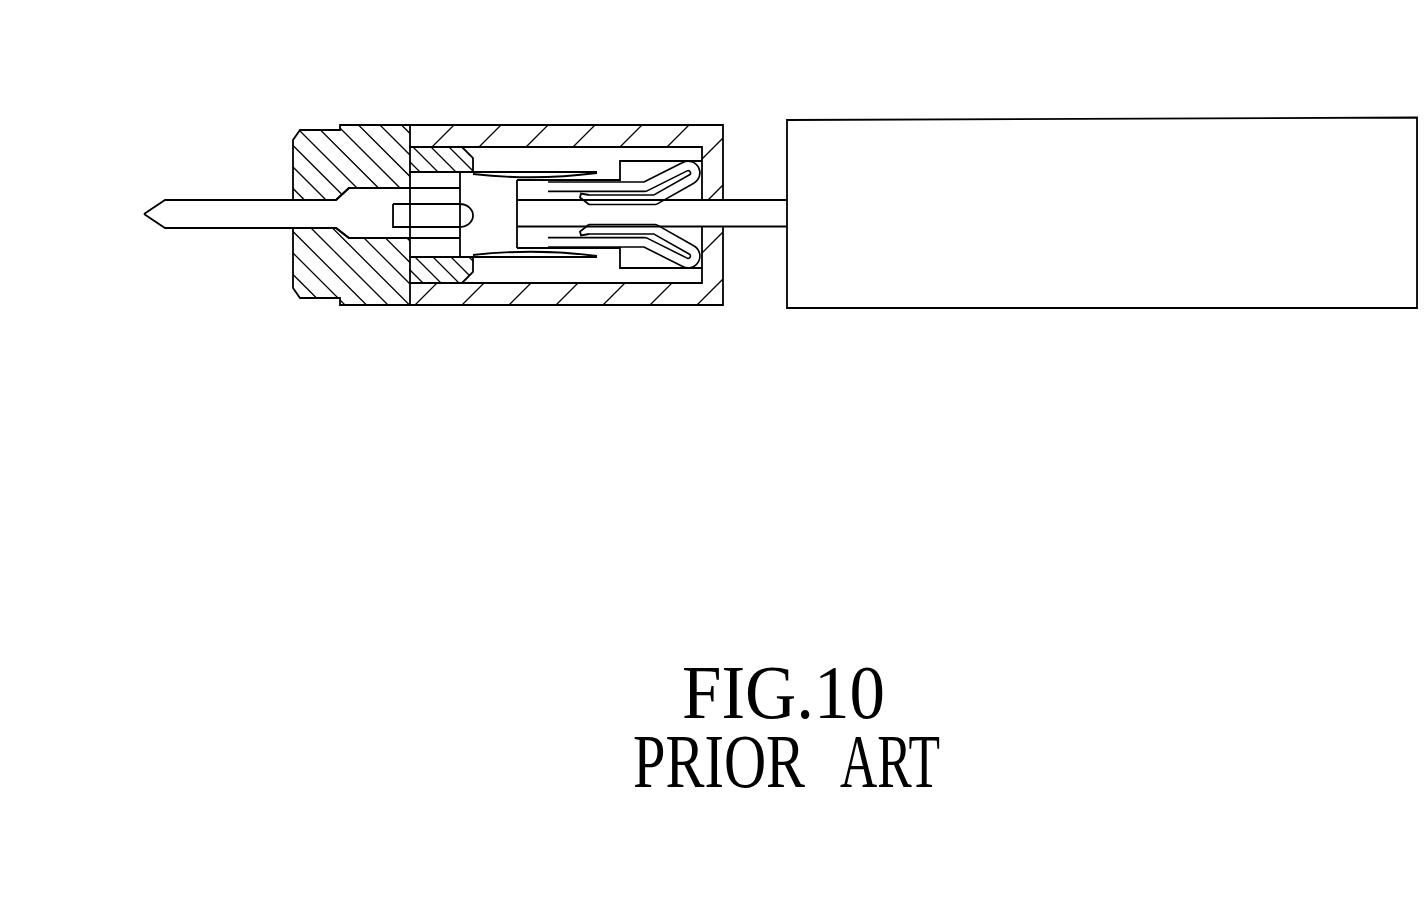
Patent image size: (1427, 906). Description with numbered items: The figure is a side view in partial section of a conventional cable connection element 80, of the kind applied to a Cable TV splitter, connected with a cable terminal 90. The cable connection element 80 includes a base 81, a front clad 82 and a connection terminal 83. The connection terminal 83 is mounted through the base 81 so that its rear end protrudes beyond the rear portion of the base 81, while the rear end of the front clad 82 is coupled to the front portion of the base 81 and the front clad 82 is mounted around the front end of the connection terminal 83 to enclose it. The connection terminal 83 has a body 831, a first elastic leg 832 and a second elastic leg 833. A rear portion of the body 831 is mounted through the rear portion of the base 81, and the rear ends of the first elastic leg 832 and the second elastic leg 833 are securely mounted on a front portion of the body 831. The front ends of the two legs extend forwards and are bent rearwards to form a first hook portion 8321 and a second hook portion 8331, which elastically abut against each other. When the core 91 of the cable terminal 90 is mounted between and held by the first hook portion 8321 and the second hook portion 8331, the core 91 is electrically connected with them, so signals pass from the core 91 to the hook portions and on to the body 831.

The cable connection element 80 is at (499, 192).
The base 81 is at (327, 293).
The front clad 82 is at (445, 133).
The connection terminal 83 is at (465, 229).
The body 831 is at (490, 243).
The first elastic leg 832 is at (657, 139).
The first hook portion 8321 is at (690, 161).
The second elastic leg 833 is at (678, 305).
The second hook portion 8331 is at (683, 267).
The cable terminal 90 is at (967, 259).
The core 91 is at (748, 215).